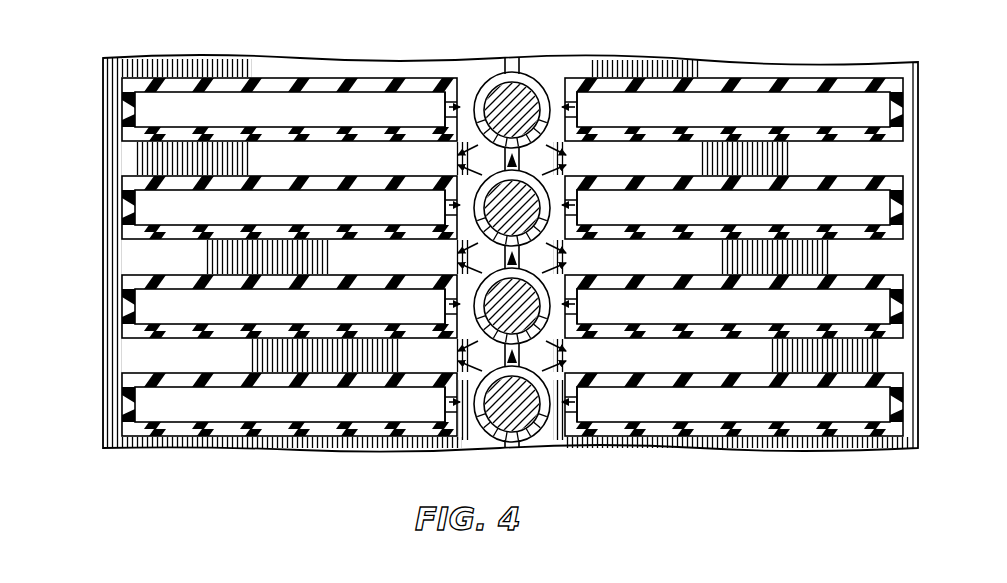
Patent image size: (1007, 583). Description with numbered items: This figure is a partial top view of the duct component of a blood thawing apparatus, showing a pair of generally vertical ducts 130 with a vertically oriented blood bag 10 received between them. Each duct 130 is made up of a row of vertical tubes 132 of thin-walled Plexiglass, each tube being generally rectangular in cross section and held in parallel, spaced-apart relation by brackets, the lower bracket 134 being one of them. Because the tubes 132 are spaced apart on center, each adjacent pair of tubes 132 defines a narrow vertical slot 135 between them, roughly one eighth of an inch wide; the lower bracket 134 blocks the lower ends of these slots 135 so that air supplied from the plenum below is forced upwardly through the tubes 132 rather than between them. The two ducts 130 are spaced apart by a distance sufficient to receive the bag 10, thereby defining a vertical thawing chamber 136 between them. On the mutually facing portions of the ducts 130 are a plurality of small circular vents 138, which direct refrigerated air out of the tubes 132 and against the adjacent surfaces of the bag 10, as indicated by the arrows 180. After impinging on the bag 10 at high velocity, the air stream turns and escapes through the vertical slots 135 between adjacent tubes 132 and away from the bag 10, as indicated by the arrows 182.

The blood bag 10 is at (505, 66).
The duct 130 is at (736, 66).
The vertical tube 132 is at (120, 294).
The lower bracket 134 is at (103, 103).
The vertical slot 135 is at (150, 153).
The thawing chamber 136 is at (556, 445).
The vent 138 is at (555, 72).
The arrows 180 is at (445, 104).
The arrows 182 is at (462, 172).